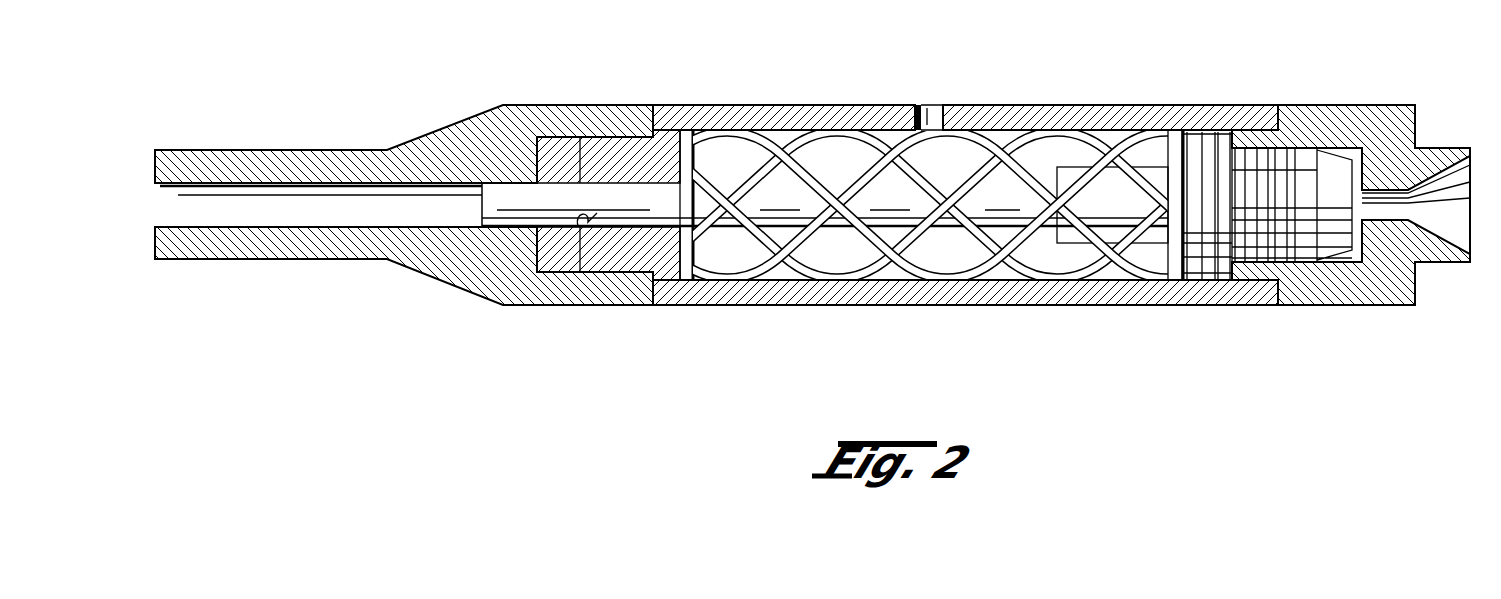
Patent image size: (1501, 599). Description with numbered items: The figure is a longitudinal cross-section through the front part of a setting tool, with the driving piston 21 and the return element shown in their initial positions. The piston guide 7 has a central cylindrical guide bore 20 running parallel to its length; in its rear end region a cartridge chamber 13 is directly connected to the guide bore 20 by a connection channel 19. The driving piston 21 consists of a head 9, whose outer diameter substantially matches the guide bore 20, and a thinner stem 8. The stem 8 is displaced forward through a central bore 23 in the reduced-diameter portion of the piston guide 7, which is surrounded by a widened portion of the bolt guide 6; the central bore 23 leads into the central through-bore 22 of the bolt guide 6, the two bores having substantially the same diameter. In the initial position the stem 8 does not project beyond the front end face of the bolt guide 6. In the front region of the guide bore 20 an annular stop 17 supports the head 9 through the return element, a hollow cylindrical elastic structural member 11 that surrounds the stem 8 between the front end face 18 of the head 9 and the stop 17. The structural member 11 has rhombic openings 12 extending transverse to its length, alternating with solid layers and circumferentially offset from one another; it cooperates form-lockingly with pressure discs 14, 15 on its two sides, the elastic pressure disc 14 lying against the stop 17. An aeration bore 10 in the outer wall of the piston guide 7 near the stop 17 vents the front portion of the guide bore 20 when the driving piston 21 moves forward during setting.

The bolt guide 6 is at (309, 160).
The central through-bore 22 is at (321, 212).
The driving piston 21 is at (488, 238).
The central bore 23 is at (582, 230).
The stem 8 is at (578, 192).
The pressure disc 14 is at (692, 131).
The stop 17 is at (689, 262).
The piston guide 7 is at (792, 117).
The aeration bore 10 is at (933, 117).
The structural member 11 is at (1031, 272).
The openings 12 is at (930, 250).
The guide bore 20 is at (1050, 147).
The pressure disc 15 is at (1172, 138).
The end face 18 is at (1178, 262).
The head 9 is at (1226, 138).
The cartridge chamber 13 is at (1448, 178).
The connection channel 19 is at (1385, 212).